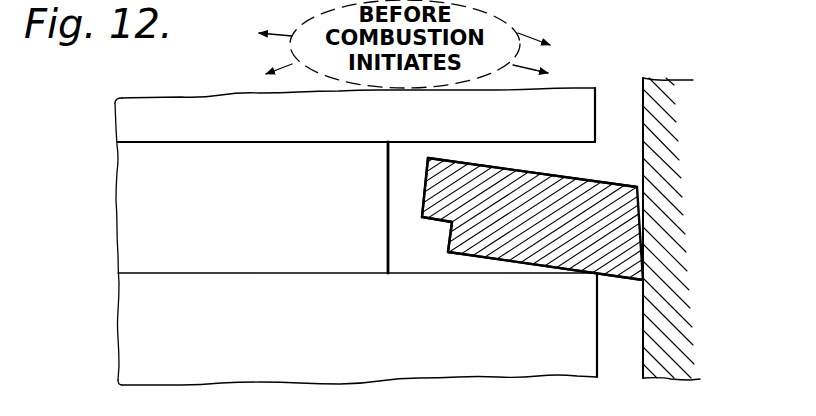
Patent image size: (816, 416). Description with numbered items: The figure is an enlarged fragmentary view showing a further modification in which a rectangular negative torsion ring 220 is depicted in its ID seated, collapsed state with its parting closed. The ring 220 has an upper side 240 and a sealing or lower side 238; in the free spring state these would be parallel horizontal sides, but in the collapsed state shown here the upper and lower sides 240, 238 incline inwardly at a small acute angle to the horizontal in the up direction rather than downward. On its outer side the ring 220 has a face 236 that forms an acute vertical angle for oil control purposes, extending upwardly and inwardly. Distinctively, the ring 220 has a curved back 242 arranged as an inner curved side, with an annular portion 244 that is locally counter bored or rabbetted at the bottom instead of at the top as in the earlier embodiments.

The rectangular negative torsion ring 220 is at (598, 200).
The face 236 is at (643, 203).
The sealing or lower side 238 is at (490, 259).
The upper side 240 is at (532, 170).
The curved back 242 is at (424, 172).
The annular portion 244 is at (424, 222).